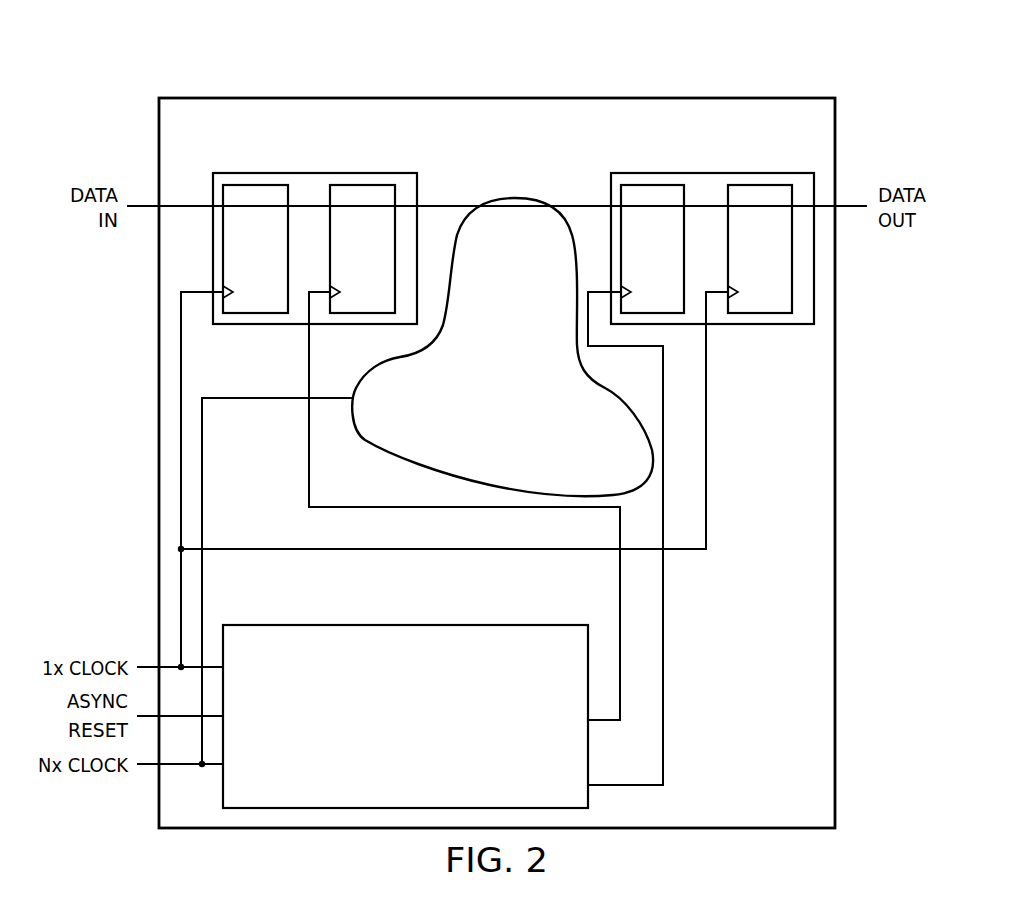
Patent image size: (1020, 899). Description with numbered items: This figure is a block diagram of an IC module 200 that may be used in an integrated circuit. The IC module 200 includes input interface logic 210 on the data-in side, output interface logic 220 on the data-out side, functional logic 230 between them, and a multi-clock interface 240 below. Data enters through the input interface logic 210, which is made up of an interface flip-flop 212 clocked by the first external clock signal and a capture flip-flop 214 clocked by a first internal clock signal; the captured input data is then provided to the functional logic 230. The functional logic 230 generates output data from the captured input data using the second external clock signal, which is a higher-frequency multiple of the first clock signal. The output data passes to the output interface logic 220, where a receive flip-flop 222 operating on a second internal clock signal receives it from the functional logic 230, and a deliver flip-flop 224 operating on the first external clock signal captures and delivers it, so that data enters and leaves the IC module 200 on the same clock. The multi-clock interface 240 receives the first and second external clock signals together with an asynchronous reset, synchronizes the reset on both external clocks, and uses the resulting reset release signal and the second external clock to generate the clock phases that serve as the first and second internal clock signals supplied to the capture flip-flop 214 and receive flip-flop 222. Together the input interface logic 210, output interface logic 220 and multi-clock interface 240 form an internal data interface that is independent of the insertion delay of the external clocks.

The IC module 200 is at (354, 93).
The input interface logic 210 is at (267, 167).
The interface flip-flop 212 is at (235, 262).
The capture flip-flop 214 is at (341, 262).
The output interface logic 220 is at (760, 166).
The receive flip-flop 222 is at (632, 262).
The deliver flip-flop 224 is at (739, 262).
The functional logic 230 is at (482, 434).
The multi-clock interface 240 is at (358, 618).